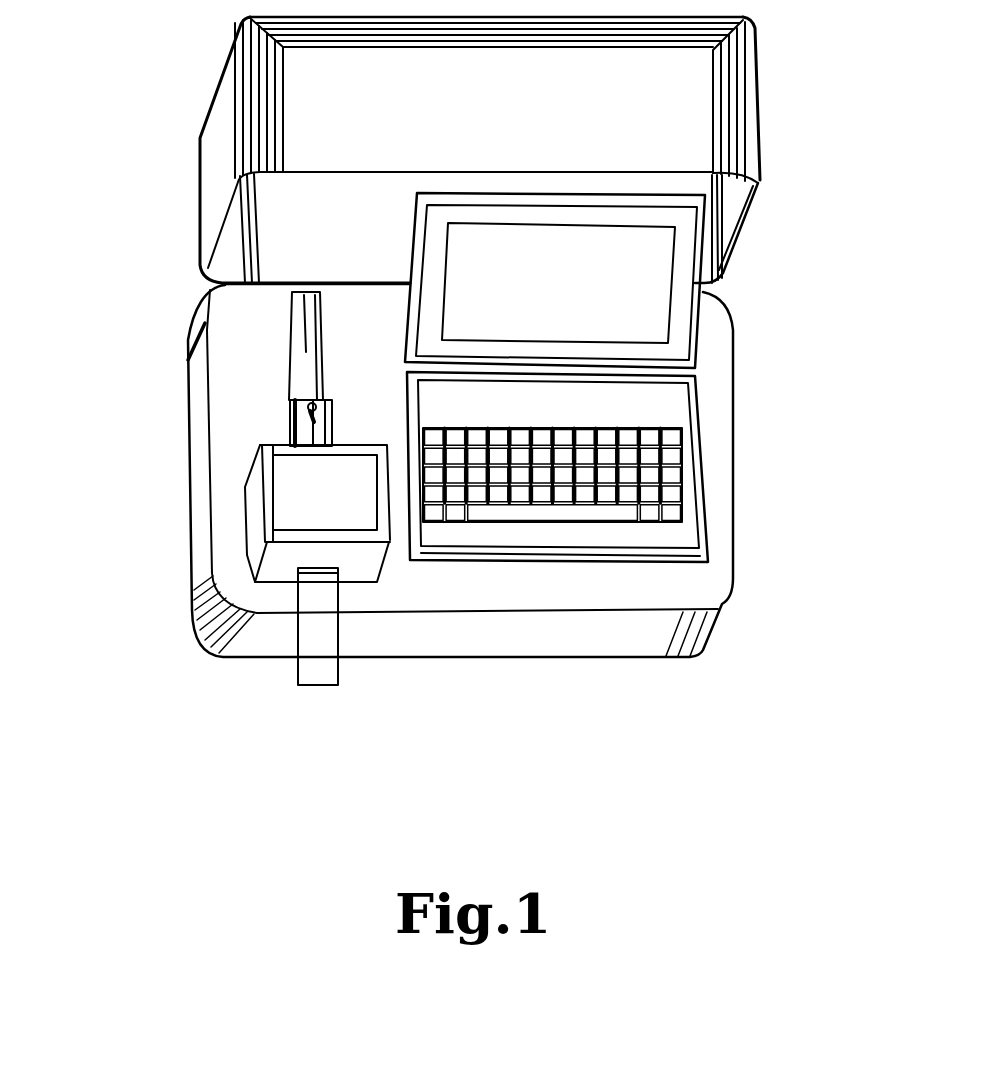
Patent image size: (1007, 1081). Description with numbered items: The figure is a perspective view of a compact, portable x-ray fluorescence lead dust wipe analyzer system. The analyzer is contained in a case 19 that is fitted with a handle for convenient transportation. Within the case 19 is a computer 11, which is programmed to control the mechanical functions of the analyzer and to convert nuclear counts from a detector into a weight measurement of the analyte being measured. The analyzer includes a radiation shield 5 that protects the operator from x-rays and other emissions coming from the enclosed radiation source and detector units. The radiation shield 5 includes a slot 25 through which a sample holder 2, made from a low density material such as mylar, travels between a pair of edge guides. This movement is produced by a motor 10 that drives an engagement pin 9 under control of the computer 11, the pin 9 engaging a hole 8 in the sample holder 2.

The sample holder 2 is at (325, 622).
The radiation shield 5 is at (367, 548).
The hole 8 is at (298, 407).
The engagement pin 9 is at (310, 412).
The motor 10 is at (307, 350).
The computer 11 is at (677, 413).
The case 19 is at (683, 590).
The slot 25 is at (300, 557).